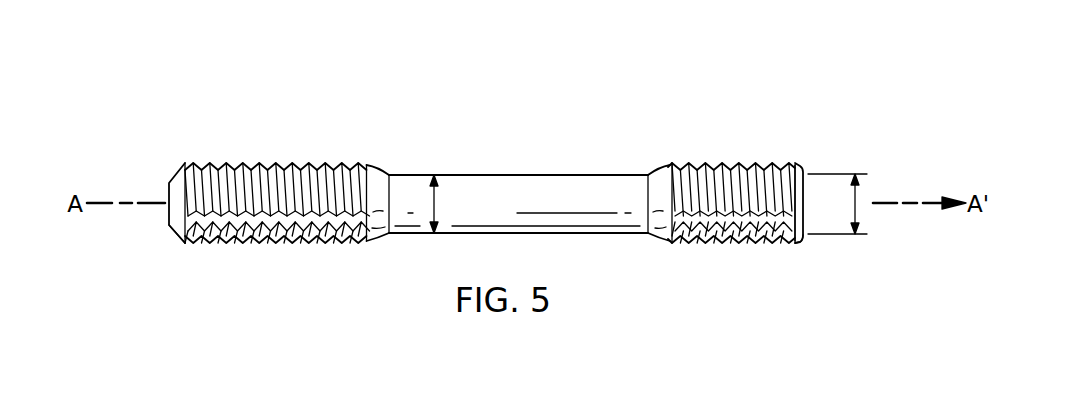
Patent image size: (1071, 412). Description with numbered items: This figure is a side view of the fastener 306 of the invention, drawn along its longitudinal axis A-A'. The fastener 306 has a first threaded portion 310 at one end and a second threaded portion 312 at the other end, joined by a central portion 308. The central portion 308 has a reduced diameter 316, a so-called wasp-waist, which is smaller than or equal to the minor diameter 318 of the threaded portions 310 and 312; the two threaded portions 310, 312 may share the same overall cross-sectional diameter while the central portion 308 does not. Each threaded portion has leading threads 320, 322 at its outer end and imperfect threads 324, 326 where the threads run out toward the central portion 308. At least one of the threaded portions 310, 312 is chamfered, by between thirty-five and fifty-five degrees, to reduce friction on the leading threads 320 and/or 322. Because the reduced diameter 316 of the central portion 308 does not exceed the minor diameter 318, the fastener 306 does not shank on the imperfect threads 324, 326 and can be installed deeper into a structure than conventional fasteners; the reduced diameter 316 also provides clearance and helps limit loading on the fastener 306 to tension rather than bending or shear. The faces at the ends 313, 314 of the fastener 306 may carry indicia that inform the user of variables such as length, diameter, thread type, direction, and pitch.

The fastener 306 is at (602, 124).
The central portion 308 is at (527, 175).
The first threaded portion 310 is at (270, 163).
The second threaded portion 312 is at (745, 164).
The end 313 is at (168, 192).
The end 314 is at (806, 189).
The reduced diameter 316 is at (436, 205).
The minor diameter 318 is at (856, 204).
The leading threads 320 is at (178, 250).
The leading threads 322 is at (802, 252).
The imperfect threads 324 is at (365, 250).
The imperfect threads 326 is at (673, 252).